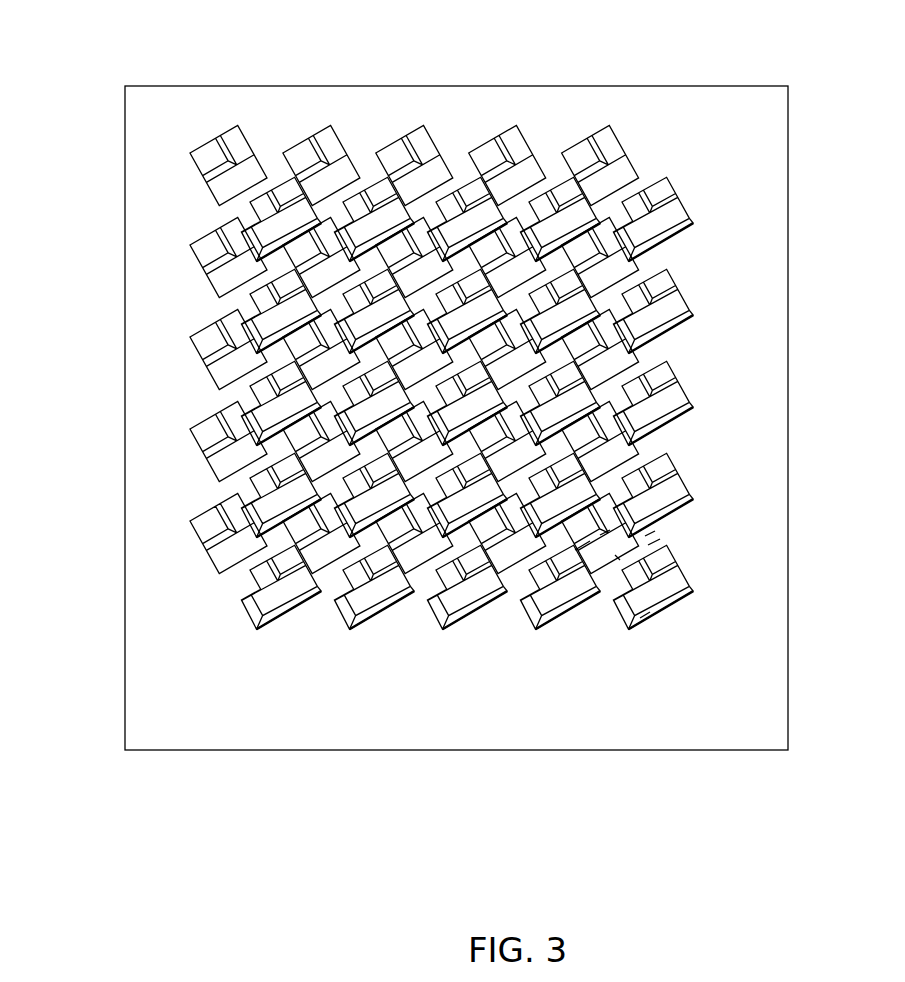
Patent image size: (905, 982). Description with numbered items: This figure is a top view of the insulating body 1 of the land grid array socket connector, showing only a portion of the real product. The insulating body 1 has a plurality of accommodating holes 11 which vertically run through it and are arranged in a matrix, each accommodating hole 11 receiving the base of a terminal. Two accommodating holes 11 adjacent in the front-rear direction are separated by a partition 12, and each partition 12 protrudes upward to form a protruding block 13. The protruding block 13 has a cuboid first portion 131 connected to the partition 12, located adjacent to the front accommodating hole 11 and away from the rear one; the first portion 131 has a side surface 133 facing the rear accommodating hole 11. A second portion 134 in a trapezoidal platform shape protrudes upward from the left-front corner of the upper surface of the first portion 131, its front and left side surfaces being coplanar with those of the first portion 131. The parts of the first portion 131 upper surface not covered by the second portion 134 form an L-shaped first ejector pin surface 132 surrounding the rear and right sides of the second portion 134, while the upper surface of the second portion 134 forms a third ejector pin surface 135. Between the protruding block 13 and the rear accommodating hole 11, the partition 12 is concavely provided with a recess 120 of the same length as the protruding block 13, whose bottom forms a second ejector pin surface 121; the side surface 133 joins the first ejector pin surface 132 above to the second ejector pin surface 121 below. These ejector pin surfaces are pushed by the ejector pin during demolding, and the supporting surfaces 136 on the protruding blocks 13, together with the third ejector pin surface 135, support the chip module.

The insulating body 1 is at (772, 80).
The accommodating hole 11 is at (667, 588).
The partition 12 is at (650, 541).
The recess 120 is at (643, 622).
The second ejector pin surface 121 is at (648, 533).
The protruding block 13 is at (590, 800).
The first portion 131 is at (566, 538).
The first ejector pin surface 132 is at (690, 498).
The side surface 133 is at (608, 556).
The second portion 134 is at (552, 552).
The third ejector pin surface 135 is at (233, 515).
The supporting surface 136 is at (205, 346).